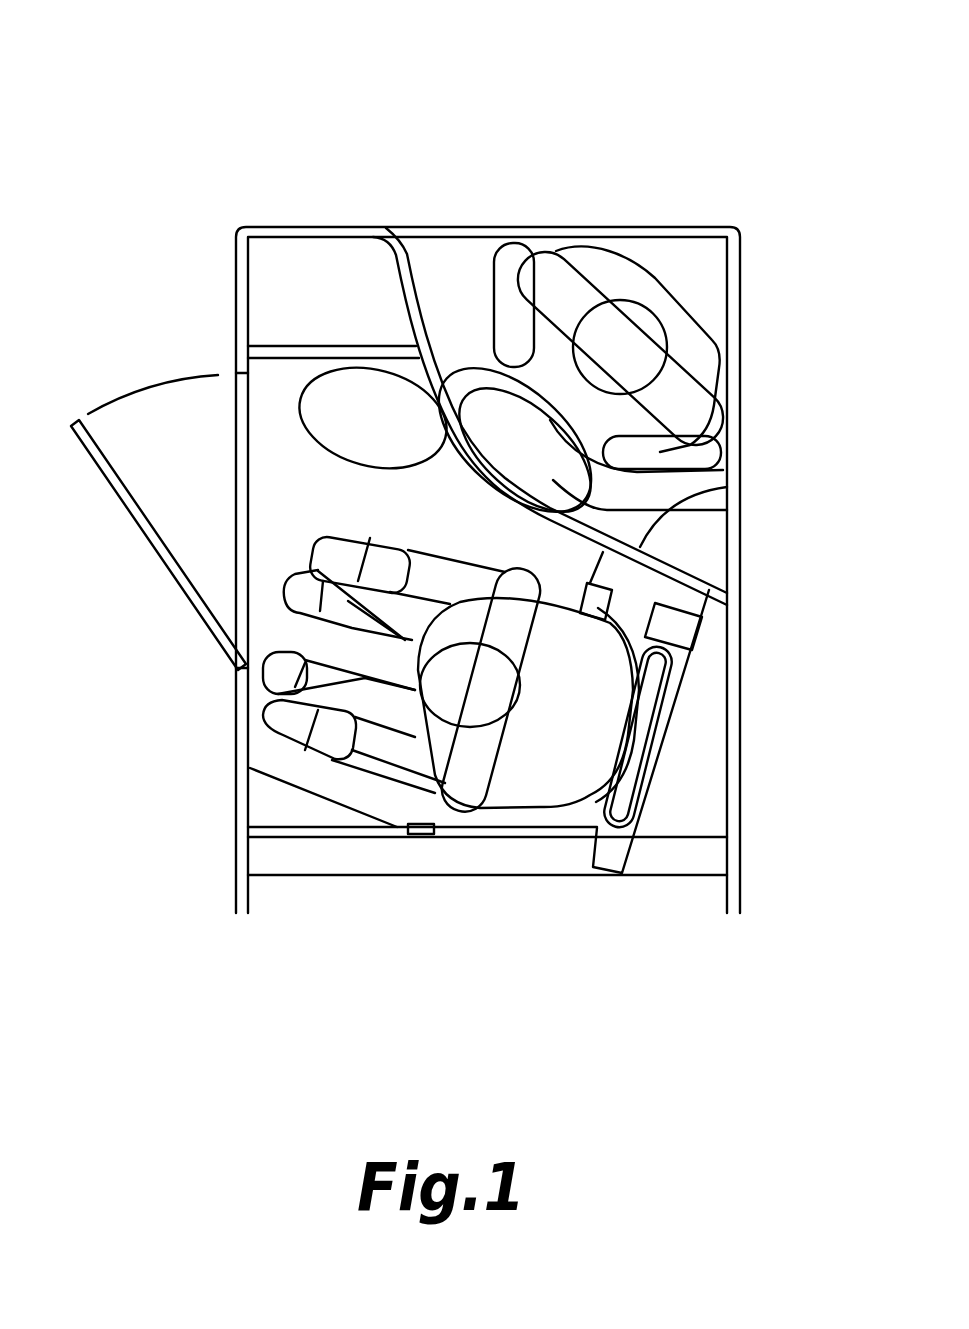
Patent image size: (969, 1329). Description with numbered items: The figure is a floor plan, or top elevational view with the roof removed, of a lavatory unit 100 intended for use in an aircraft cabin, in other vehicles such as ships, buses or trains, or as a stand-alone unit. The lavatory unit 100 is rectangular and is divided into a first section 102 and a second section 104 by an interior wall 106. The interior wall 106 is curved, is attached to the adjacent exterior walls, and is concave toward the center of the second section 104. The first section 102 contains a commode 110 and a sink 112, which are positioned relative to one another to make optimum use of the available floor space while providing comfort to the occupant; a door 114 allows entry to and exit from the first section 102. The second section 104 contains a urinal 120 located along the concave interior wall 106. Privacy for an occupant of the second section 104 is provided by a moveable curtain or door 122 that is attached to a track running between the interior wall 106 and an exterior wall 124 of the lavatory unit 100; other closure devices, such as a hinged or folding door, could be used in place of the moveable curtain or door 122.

The lavatory unit 100 is at (743, 90).
The first section 102 is at (337, 496).
The second section 104 is at (680, 278).
The interior wall 106 is at (685, 575).
The commode 110 is at (560, 753).
The sink 112 is at (345, 410).
The door 114 is at (150, 548).
The urinal 120 is at (727, 510).
The moveable curtain or door 122 is at (449, 230).
The exterior wall 124 is at (737, 287).